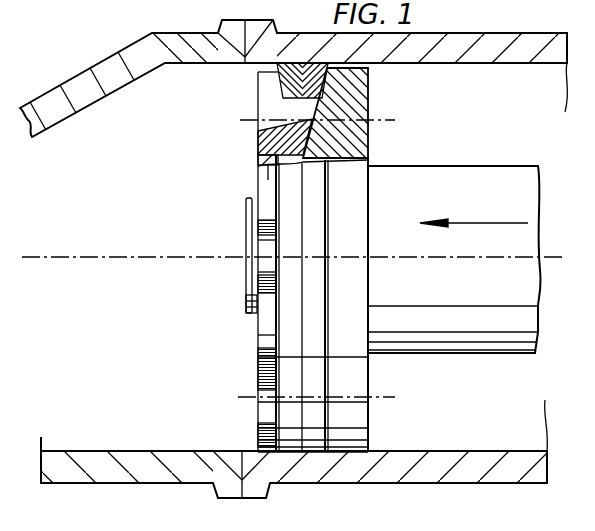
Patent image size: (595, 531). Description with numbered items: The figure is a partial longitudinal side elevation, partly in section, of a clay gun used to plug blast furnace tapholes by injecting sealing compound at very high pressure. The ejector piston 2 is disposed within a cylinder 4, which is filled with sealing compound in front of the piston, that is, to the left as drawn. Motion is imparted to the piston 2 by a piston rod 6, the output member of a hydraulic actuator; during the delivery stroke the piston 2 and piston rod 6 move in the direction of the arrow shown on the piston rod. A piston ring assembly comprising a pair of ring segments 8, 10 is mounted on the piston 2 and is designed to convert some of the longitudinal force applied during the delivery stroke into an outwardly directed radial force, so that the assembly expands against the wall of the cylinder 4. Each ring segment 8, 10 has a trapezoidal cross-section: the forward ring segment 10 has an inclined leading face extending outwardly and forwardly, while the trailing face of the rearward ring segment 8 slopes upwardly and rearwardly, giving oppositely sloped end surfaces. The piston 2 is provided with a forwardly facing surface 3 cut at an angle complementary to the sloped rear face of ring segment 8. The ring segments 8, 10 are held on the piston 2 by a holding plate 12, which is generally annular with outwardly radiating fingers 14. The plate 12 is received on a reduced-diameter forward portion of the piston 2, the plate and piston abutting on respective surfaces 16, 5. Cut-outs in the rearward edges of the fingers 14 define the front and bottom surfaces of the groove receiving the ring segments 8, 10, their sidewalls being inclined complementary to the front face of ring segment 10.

The piston 2 is at (338, 241).
The forwardly facing surface 3 is at (301, 121).
The cylinder 4 is at (498, 64).
The abutting surface 5 is at (260, 172).
The piston rod 6 is at (456, 176).
The ring segment 8 is at (325, 88).
The ring segment 10 is at (275, 78).
The holding plate 12 is at (264, 135).
The fingers 14 is at (263, 97).
The abutting surface 16 is at (262, 149).